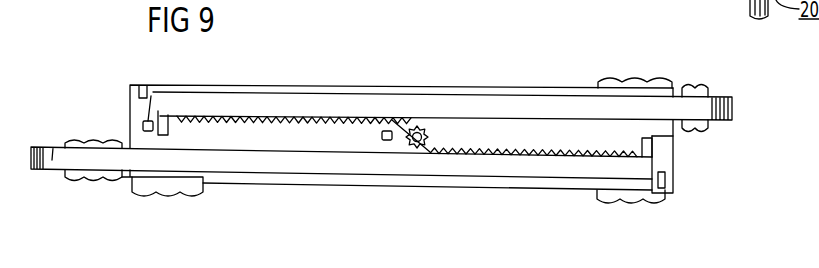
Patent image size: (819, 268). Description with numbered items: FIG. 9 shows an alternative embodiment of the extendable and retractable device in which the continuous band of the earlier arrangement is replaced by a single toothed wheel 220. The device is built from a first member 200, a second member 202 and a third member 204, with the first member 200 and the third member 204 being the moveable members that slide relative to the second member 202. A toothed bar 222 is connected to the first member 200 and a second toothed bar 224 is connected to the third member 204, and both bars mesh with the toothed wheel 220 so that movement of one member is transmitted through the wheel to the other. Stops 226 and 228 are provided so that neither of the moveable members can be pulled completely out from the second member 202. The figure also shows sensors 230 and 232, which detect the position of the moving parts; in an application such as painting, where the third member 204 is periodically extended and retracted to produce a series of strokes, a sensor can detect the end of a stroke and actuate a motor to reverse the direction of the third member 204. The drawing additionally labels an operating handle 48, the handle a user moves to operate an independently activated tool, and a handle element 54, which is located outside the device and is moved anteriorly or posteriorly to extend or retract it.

The first member 200 is at (54, 148).
The second member 202 is at (673, 137).
The third member 204 is at (697, 108).
The toothed wheel 220 is at (417, 126).
The toothed bar 222 is at (506, 152).
The toothed bar 224 is at (233, 115).
The stop 226 is at (647, 142).
The stop 228 is at (164, 114).
The sensor 230 is at (382, 136).
The sensor 232 is at (143, 127).
The operating handle 48 is at (88, 184).
The handle element 54 is at (167, 197).